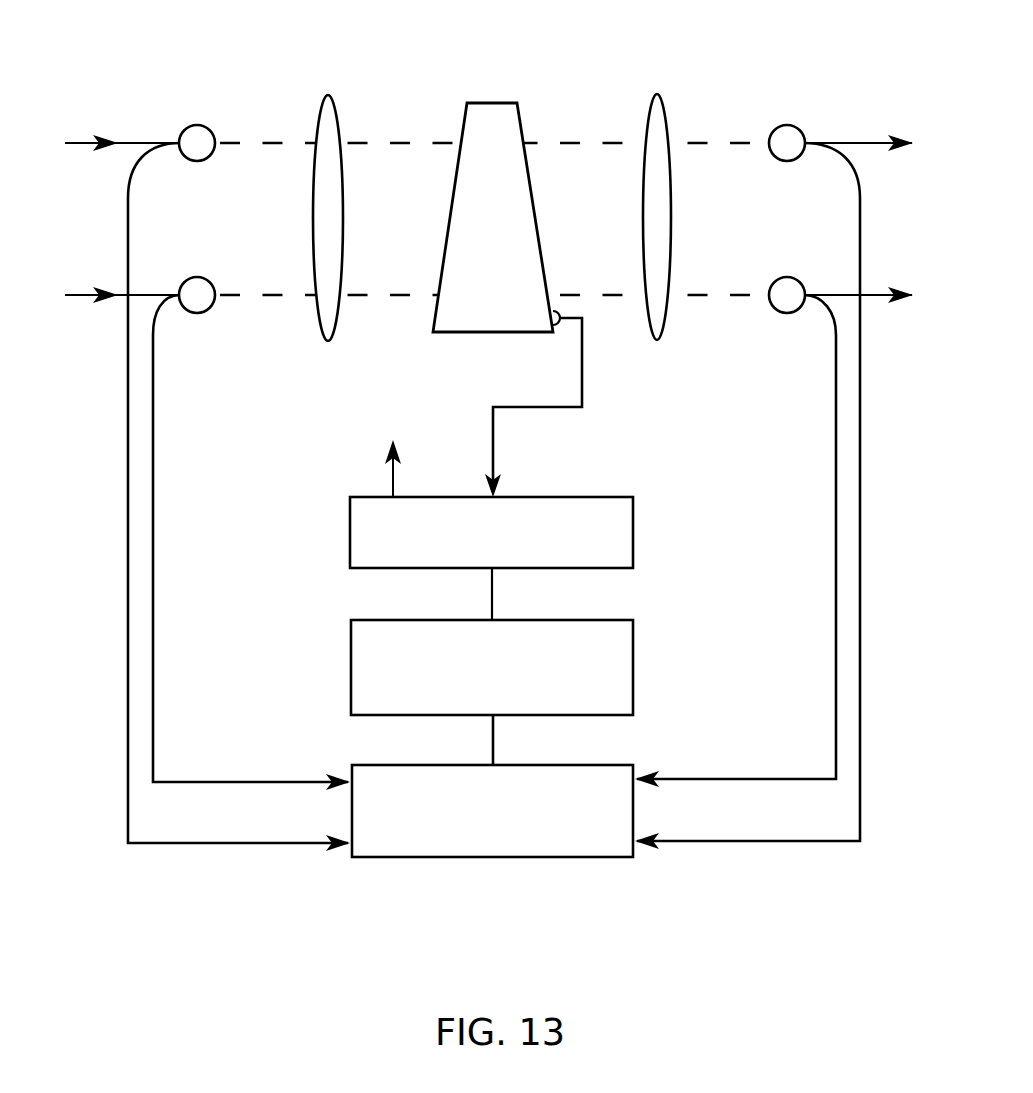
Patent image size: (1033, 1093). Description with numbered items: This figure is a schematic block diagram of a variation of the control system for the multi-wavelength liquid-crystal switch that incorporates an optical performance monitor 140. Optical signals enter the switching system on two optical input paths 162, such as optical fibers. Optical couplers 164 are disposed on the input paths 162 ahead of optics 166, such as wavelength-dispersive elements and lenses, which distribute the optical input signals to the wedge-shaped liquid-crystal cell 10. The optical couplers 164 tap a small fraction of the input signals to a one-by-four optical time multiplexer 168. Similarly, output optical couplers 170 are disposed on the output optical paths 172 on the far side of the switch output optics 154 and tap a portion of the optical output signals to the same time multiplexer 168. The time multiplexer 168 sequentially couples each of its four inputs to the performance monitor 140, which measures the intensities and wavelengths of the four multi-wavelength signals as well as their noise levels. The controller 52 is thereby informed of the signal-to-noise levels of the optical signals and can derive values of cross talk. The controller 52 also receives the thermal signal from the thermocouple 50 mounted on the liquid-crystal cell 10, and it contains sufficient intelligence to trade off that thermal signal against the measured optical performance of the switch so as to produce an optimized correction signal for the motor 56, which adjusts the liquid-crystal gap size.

The wedge-shaped liquid-crystal cell 10 is at (493, 110).
The thermocouple 50 is at (563, 314).
The controller 52 is at (625, 540).
The motor 56 is at (393, 451).
The performance monitor 140 is at (625, 680).
The switch output optics 154 is at (653, 110).
The optical input paths 162 is at (115, 141).
The optical couplers 164 is at (190, 124).
The optics 166 is at (320, 100).
The 1x4 optical time multiplexer 168 is at (603, 849).
The output optical couplers 170 is at (781, 125).
The output optical paths 172 is at (876, 142).